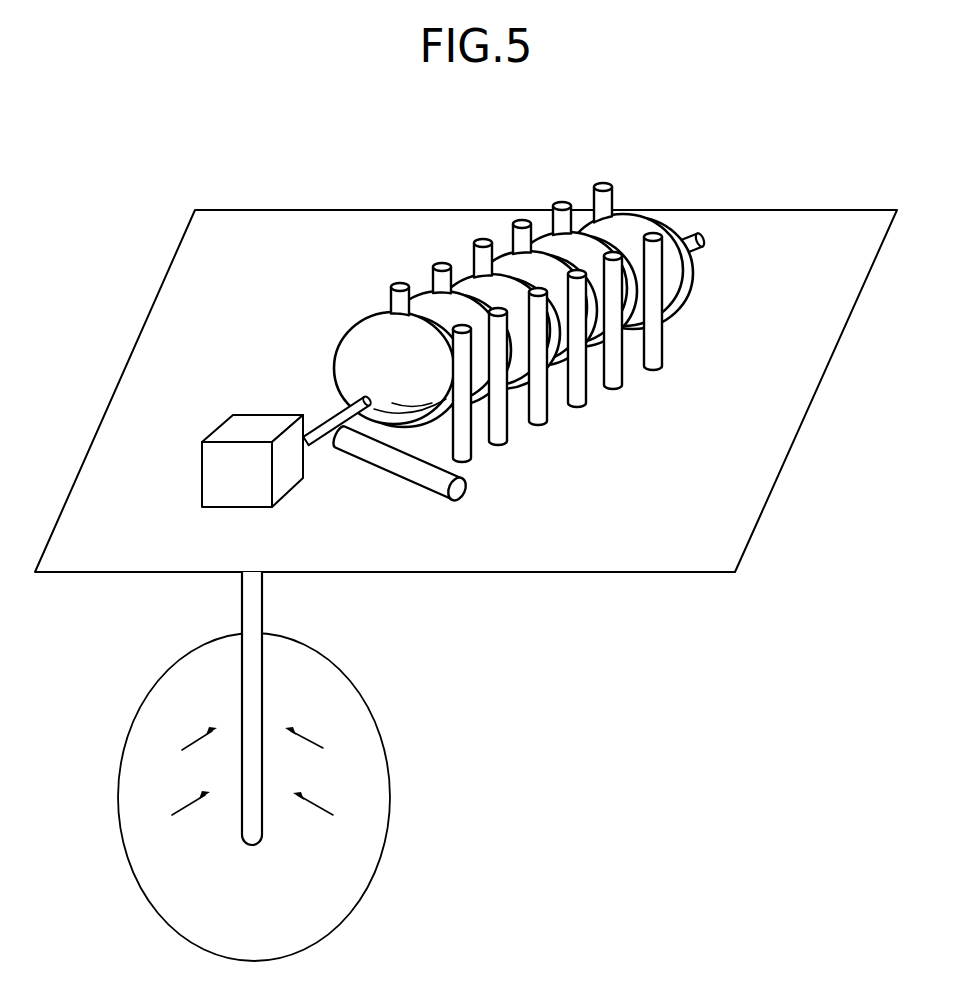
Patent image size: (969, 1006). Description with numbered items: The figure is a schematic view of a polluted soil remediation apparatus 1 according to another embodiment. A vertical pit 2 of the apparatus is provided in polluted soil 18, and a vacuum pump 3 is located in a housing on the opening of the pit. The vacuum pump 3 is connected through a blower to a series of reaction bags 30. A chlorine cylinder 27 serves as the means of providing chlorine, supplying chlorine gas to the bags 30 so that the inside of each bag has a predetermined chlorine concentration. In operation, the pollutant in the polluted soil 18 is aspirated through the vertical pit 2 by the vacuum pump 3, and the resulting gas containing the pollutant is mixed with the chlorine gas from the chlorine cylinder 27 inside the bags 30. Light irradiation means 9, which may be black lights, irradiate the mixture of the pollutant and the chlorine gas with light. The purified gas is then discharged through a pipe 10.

The polluted soil remediation apparatus 1 is at (345, 171).
The vertical pit 2 is at (242, 610).
The vacuum pump 3 is at (212, 462).
The light irradiation means 9 is at (371, 270).
The pipe 10 is at (685, 243).
The polluted soil 18 is at (367, 782).
The chlorine cylinder 27 is at (418, 475).
The reaction bags 30 is at (588, 250).